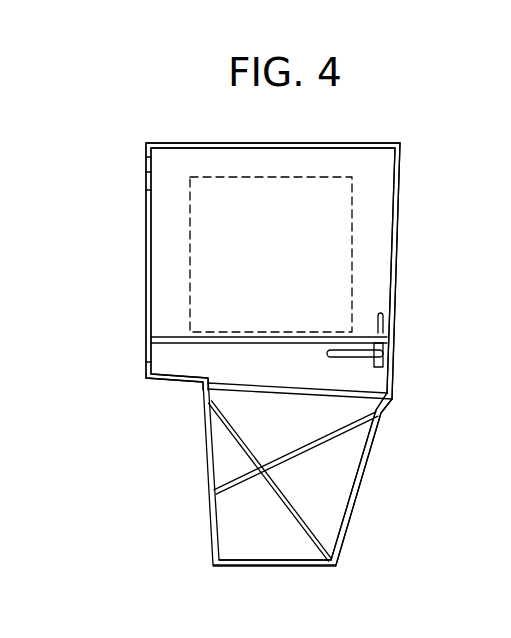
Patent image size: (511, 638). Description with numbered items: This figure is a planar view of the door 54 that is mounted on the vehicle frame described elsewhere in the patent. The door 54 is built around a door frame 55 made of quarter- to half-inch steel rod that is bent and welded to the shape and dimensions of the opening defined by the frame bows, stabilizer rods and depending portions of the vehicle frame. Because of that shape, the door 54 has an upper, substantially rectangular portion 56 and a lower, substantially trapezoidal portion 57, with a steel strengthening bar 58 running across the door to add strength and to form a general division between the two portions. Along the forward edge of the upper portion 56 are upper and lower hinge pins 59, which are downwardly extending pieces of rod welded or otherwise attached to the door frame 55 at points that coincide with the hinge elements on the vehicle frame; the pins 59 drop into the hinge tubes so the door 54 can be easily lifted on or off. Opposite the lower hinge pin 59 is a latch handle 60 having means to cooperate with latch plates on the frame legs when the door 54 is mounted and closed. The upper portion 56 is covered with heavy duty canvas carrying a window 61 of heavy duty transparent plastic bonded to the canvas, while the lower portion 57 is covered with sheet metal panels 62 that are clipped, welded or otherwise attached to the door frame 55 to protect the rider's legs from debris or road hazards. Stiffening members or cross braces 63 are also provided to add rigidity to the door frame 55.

The door 54 is at (432, 220).
The door frame 55 is at (270, 143).
The upper portion 56 is at (412, 278).
The lower portion 57 is at (394, 442).
The strengthening bar 58 is at (238, 387).
The hinge pins 59 is at (146, 189).
The latch handle 60 is at (383, 352).
The window 61 is at (207, 267).
The sheet metal panels 62 is at (240, 532).
The cross braces 63 is at (168, 337).